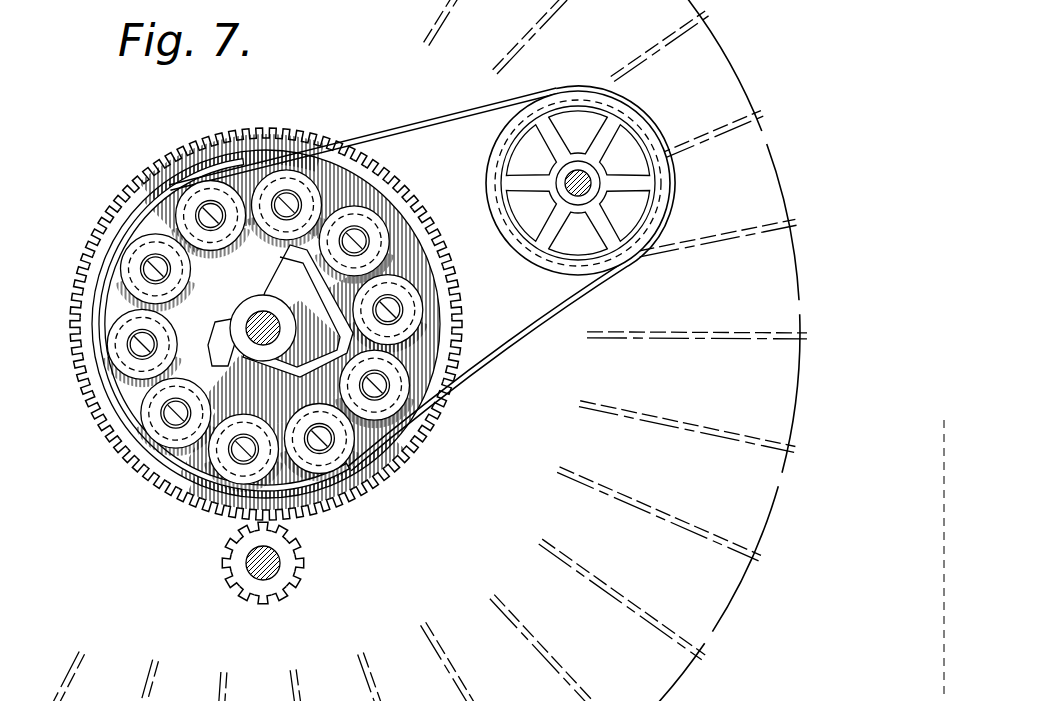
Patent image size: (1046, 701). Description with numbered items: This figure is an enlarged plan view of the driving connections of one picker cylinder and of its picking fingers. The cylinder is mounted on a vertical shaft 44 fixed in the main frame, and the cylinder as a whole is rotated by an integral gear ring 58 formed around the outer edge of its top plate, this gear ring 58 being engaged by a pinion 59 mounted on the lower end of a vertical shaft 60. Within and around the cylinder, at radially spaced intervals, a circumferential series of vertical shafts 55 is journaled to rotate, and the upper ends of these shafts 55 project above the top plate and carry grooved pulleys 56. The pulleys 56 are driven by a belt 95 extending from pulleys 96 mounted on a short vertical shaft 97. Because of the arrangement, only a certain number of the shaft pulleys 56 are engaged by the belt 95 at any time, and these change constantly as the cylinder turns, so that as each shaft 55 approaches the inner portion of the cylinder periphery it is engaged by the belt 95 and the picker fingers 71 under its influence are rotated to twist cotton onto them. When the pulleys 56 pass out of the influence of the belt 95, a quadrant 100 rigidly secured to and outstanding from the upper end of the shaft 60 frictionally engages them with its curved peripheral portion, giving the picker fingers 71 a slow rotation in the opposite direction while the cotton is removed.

The vertical shaft 44 is at (262, 327).
The vertical shafts 55 is at (244, 452).
The grooved pulleys 56 is at (265, 346).
The gear ring 58 is at (253, 137).
The pinion 59 is at (304, 578).
The vertical shaft 60 is at (250, 565).
The picker fingers 71 is at (556, 8).
The belt 95 is at (478, 372).
The pulleys 96 is at (516, 240).
The short vertical shaft 97 is at (576, 170).
The quadrant 100 is at (322, 267).